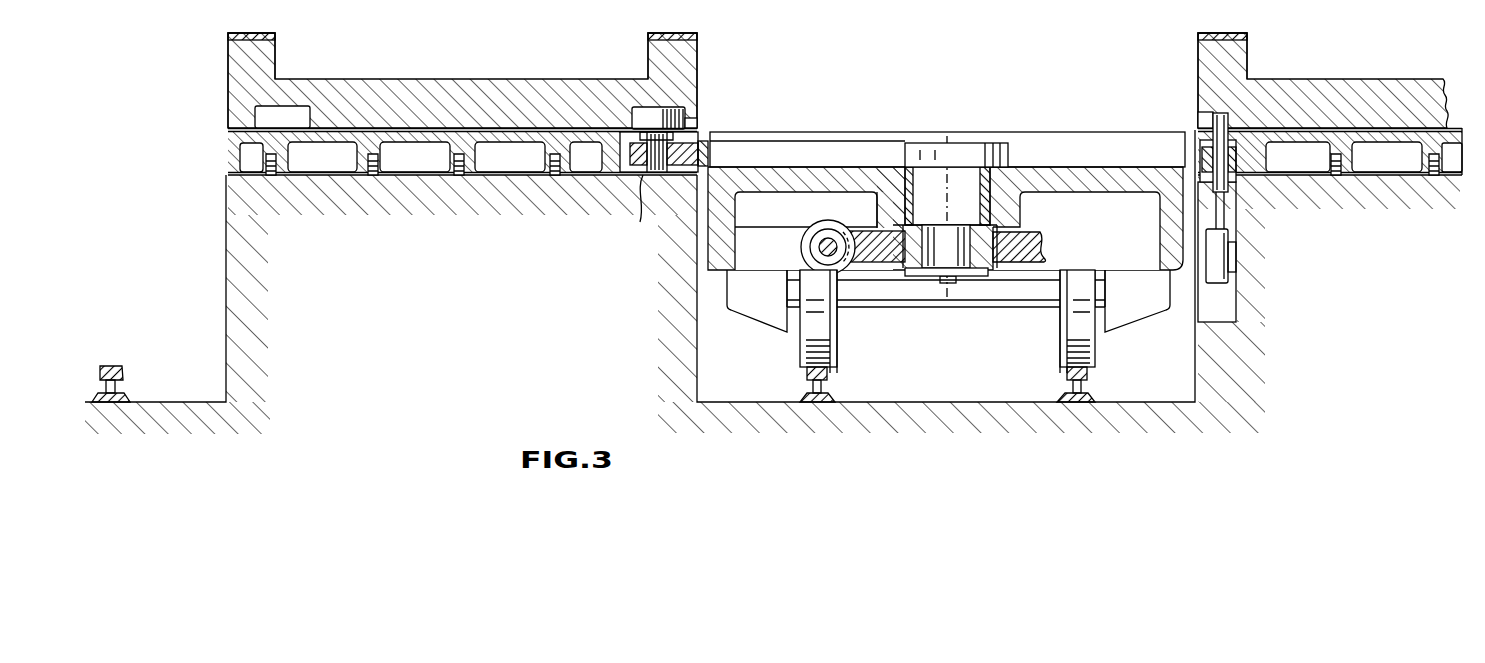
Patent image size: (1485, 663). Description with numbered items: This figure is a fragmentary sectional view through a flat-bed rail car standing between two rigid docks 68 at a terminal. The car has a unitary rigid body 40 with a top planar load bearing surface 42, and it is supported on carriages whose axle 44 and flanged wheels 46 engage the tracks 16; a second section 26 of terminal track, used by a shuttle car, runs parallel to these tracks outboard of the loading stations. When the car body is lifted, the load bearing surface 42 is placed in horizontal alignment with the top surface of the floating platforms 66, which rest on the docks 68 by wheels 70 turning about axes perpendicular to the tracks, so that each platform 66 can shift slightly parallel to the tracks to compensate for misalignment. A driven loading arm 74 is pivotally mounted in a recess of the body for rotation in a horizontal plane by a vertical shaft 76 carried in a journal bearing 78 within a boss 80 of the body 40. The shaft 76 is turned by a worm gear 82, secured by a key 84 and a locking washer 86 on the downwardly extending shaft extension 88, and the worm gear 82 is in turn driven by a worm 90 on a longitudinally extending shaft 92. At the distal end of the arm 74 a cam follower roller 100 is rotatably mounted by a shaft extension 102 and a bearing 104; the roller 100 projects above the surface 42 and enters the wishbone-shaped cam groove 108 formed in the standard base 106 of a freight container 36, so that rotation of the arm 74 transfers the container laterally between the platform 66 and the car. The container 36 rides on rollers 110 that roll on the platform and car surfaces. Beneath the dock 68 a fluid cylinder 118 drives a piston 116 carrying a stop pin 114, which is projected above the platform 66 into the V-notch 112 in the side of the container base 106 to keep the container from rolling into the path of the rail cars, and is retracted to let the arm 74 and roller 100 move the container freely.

The tracks 16 is at (826, 378).
The second section of track 26 is at (118, 370).
The freight container 36 is at (702, 62).
The rail car body 40 is at (1047, 170).
The load bearing surface 42 is at (1005, 133).
The axle 44 is at (916, 300).
The flanged wheels 46 is at (830, 357).
The floating platform 66 is at (526, 136).
The rigid dock 68 is at (471, 305).
The wheels 70 is at (380, 168).
The loading arm 74 is at (787, 150).
The shaft 76 is at (932, 190).
The journal bearing 78 is at (917, 182).
The boss 80 is at (886, 178).
The worm gear 82 is at (1032, 238).
The key 84 is at (908, 290).
The locking washer 86 is at (967, 282).
The shaft extension 88 is at (950, 282).
The worm 90 is at (810, 265).
The longitudinally extending shaft 92 is at (812, 248).
The cam follower roller 100 is at (697, 124).
The shaft extension 102 is at (640, 220).
The bearing 104 is at (700, 163).
The container base 106 is at (498, 80).
The cam groove 108 is at (262, 115).
The rollers 110 is at (343, 137).
The V-notch 112 is at (1203, 122).
The stop pin 114 is at (1215, 138).
The piston 116 is at (1225, 218).
The fluid cylinder 118 is at (1233, 284).